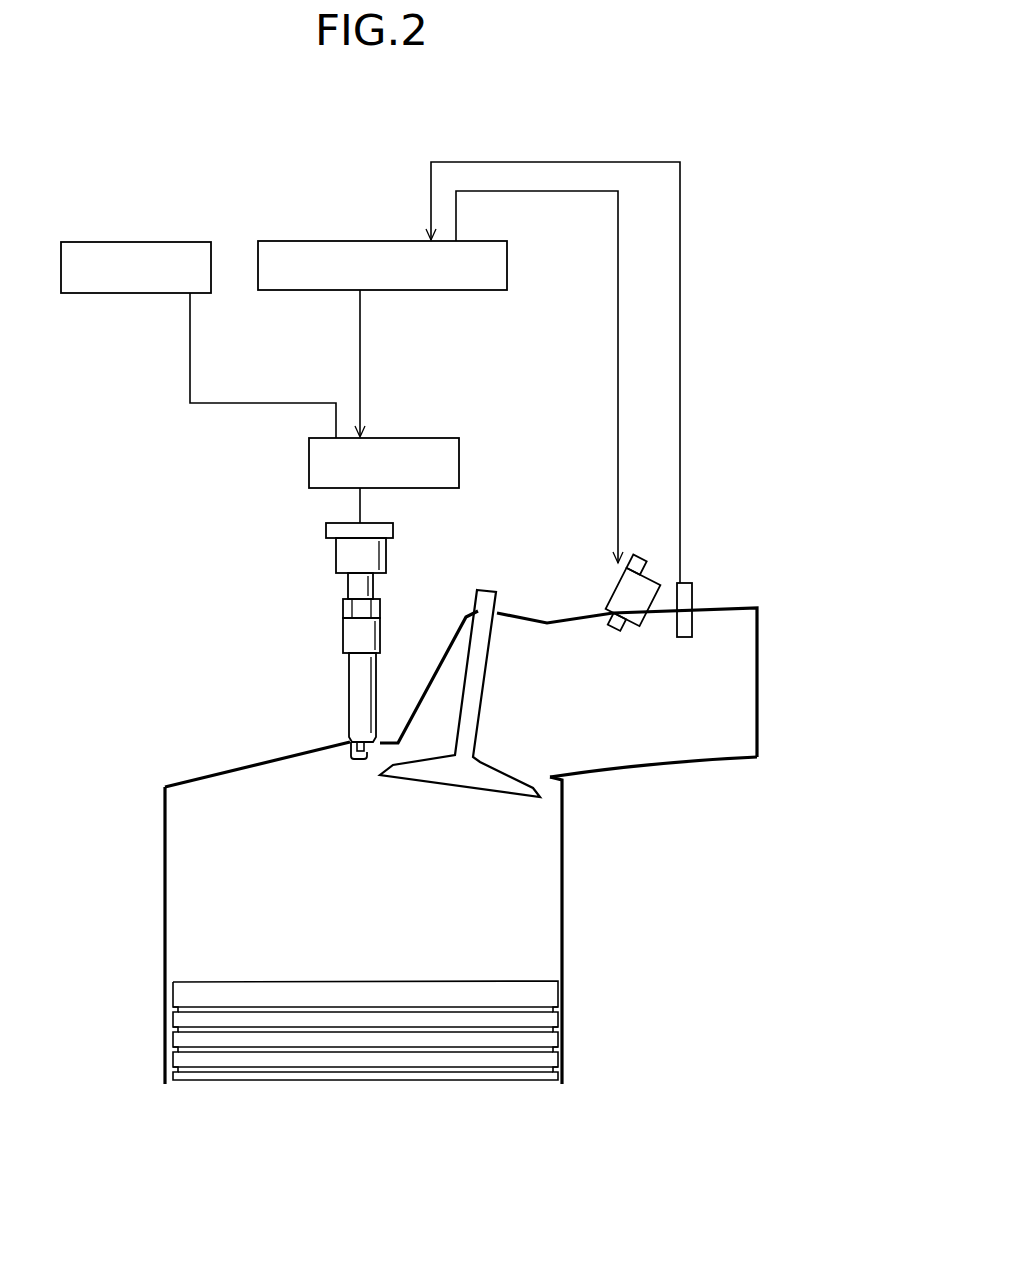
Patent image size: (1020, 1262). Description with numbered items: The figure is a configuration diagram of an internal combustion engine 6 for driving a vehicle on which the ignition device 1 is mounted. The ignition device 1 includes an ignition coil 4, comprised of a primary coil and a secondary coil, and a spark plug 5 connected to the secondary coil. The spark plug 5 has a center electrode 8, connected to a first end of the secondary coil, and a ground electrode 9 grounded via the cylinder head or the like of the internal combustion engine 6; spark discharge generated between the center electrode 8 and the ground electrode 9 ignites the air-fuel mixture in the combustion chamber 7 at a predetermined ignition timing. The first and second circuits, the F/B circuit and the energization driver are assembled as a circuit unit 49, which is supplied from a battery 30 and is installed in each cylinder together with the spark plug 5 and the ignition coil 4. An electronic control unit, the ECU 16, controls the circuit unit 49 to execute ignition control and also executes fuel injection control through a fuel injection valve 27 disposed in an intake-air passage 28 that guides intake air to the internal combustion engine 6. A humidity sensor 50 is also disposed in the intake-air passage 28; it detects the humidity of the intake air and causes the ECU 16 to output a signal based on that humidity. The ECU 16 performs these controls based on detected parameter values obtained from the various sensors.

The ignition device 1 is at (673, 95).
The ignition coil 4 is at (386, 551).
The spark plug 5 is at (381, 620).
The internal combustion engine 6 is at (585, 920).
The combustion chamber 7 is at (562, 850).
The center electrode 8 is at (372, 748).
The ground electrode 9 is at (351, 755).
The electronic control unit (ECU) 16 is at (340, 241).
The fuel injection valve 27 is at (667, 568).
The intake-air passage 28 is at (635, 767).
The battery 30 is at (128, 242).
The circuit unit 49 is at (459, 465).
The humidity sensor 50 is at (693, 592).